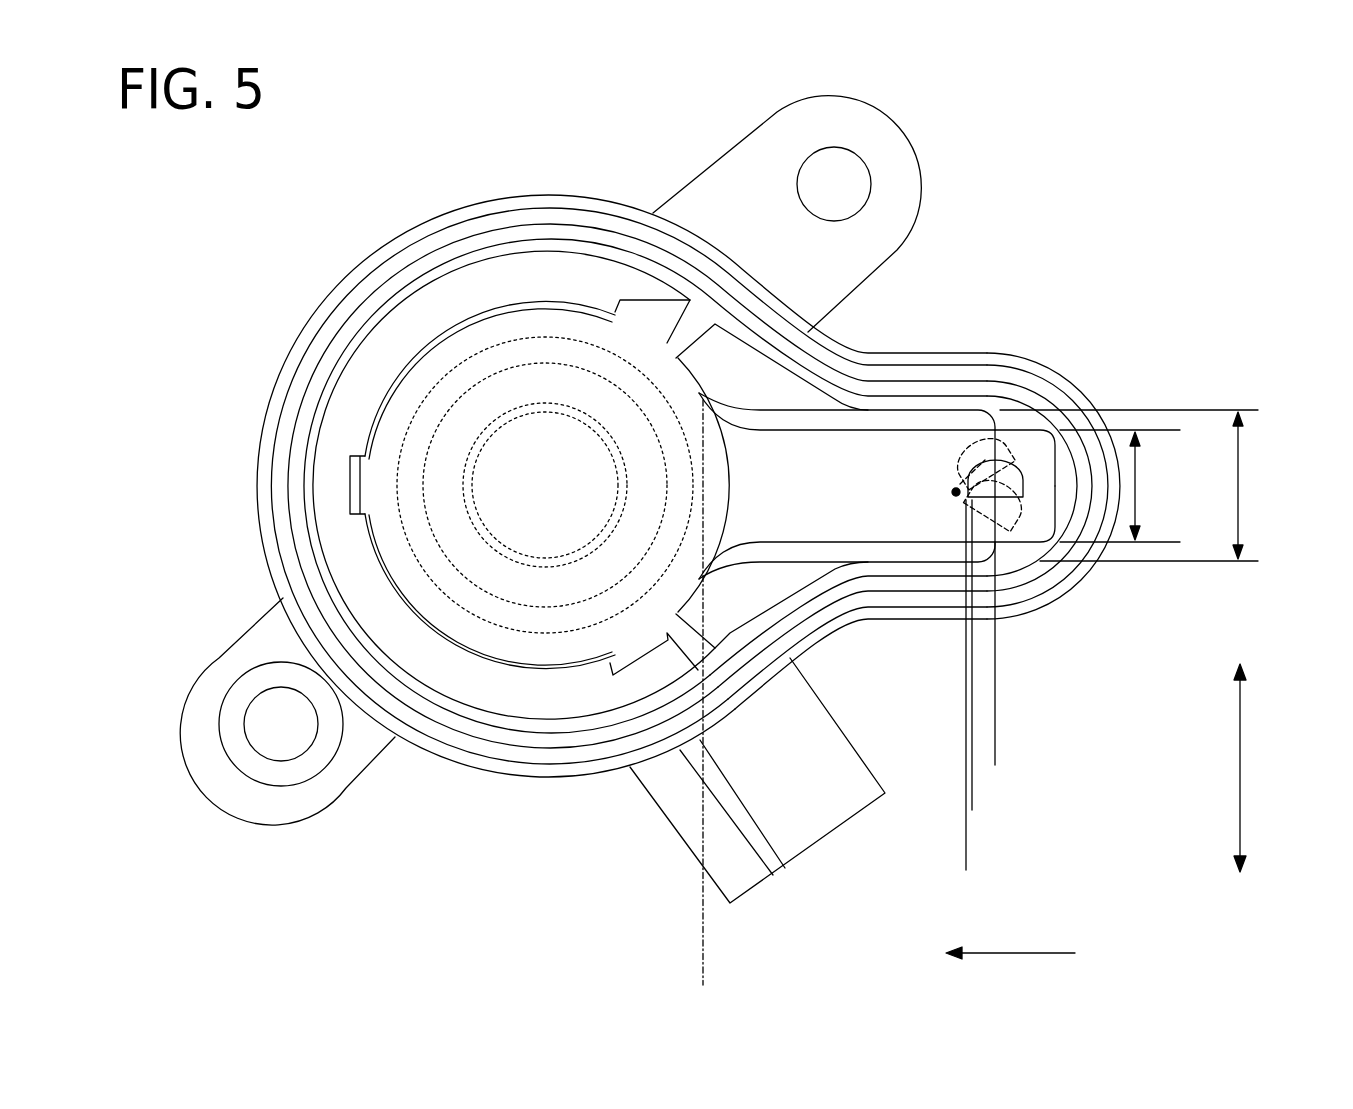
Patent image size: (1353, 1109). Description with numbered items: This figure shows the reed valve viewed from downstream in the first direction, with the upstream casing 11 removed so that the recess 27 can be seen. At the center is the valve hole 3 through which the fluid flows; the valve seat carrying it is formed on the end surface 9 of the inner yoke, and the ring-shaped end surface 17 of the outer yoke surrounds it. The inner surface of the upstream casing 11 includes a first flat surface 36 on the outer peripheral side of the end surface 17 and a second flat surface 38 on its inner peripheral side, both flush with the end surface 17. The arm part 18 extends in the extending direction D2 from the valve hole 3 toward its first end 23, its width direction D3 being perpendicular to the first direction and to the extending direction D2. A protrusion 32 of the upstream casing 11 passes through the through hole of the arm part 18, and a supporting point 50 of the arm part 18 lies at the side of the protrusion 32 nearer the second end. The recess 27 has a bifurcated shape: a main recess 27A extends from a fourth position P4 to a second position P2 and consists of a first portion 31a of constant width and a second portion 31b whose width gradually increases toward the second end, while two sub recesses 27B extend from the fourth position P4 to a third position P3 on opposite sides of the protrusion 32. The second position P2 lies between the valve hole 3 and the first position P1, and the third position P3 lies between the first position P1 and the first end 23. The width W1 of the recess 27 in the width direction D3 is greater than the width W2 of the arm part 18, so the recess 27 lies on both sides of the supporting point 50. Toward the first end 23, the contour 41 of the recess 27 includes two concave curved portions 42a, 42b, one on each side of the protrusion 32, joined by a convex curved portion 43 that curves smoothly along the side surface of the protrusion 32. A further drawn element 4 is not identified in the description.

The valve hole 3 is at (510, 508).
The tab 4 is at (598, 305).
The end surface of inner yoke 9 is at (503, 413).
The upstream casing 11 is at (256, 497).
The end surface of outer yoke 17 is at (605, 607).
The arm part 18 is at (910, 410).
The first end 23 is at (1090, 447).
The recess 27 is at (957, 490).
The main recess 27A is at (835, 563).
The sub recess 27B is at (1015, 535).
The first portion 31a is at (897, 563).
The second portion 31b is at (737, 565).
The protrusion 32 is at (1086, 468).
The first flat surface 36 is at (660, 613).
The second flat surface 38 is at (553, 588).
The contour 41 is at (798, 563).
The concave curved portion 42a is at (1020, 462).
The concave curved portion 42b is at (1000, 540).
The convex curved portion 43 is at (1022, 553).
The supporting point 50 is at (997, 425).
The first position P1 is at (973, 808).
The second position P2 is at (710, 933).
The third position P3 is at (997, 763).
The fourth position P4 is at (967, 868).
The width of the recess W1 is at (1142, 485).
The width of the arm part W2 is at (1121, 486).
The extending direction D2 is at (1035, 958).
The width direction D3 is at (1262, 768).